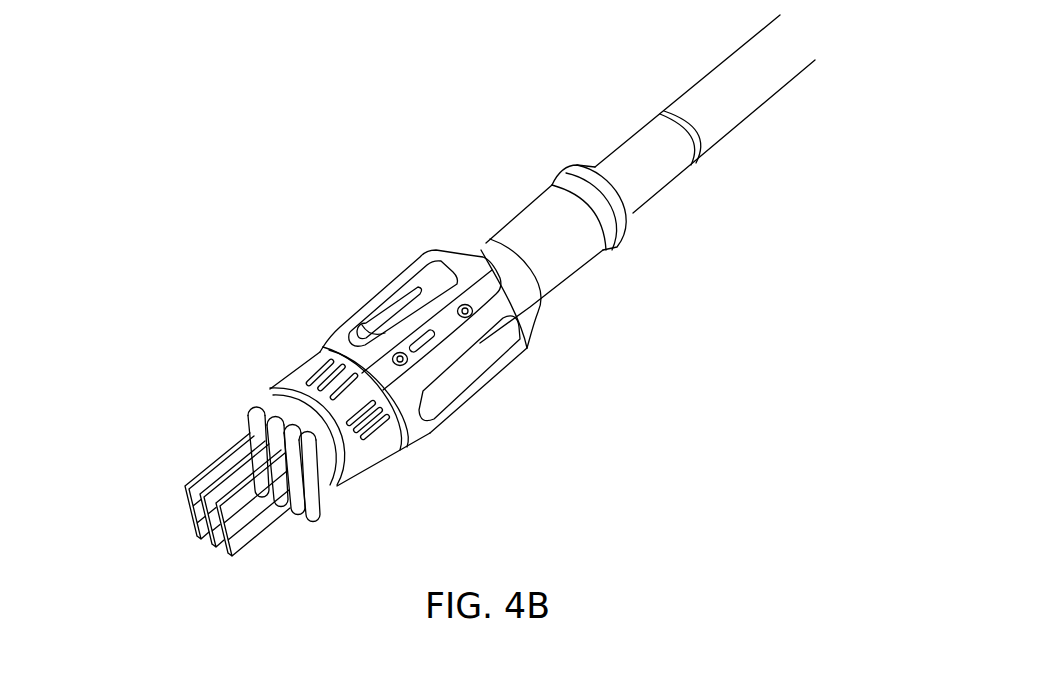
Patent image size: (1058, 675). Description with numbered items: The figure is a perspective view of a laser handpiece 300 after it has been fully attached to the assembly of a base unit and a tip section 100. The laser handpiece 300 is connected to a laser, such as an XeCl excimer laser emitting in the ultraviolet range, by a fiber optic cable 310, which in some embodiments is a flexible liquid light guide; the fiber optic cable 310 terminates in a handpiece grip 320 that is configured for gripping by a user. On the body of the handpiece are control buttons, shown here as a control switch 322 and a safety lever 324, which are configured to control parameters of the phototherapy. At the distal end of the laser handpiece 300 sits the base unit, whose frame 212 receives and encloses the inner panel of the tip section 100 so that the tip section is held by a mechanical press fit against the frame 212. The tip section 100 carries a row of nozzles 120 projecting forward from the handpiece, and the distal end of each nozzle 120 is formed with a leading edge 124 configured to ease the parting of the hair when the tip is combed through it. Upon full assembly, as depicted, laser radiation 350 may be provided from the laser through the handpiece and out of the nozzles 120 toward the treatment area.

The laser handpiece 300 is at (352, 94).
The fiber optic cable 310 is at (689, 108).
The handpiece grip 320 is at (536, 220).
The control switch 322 is at (474, 309).
The safety lever 324 is at (389, 323).
The tip section 100 is at (237, 386).
The frame 212 is at (342, 460).
The nozzles 120 is at (315, 485).
The leading edge 124 is at (248, 416).
The laser radiation 350 is at (205, 465).